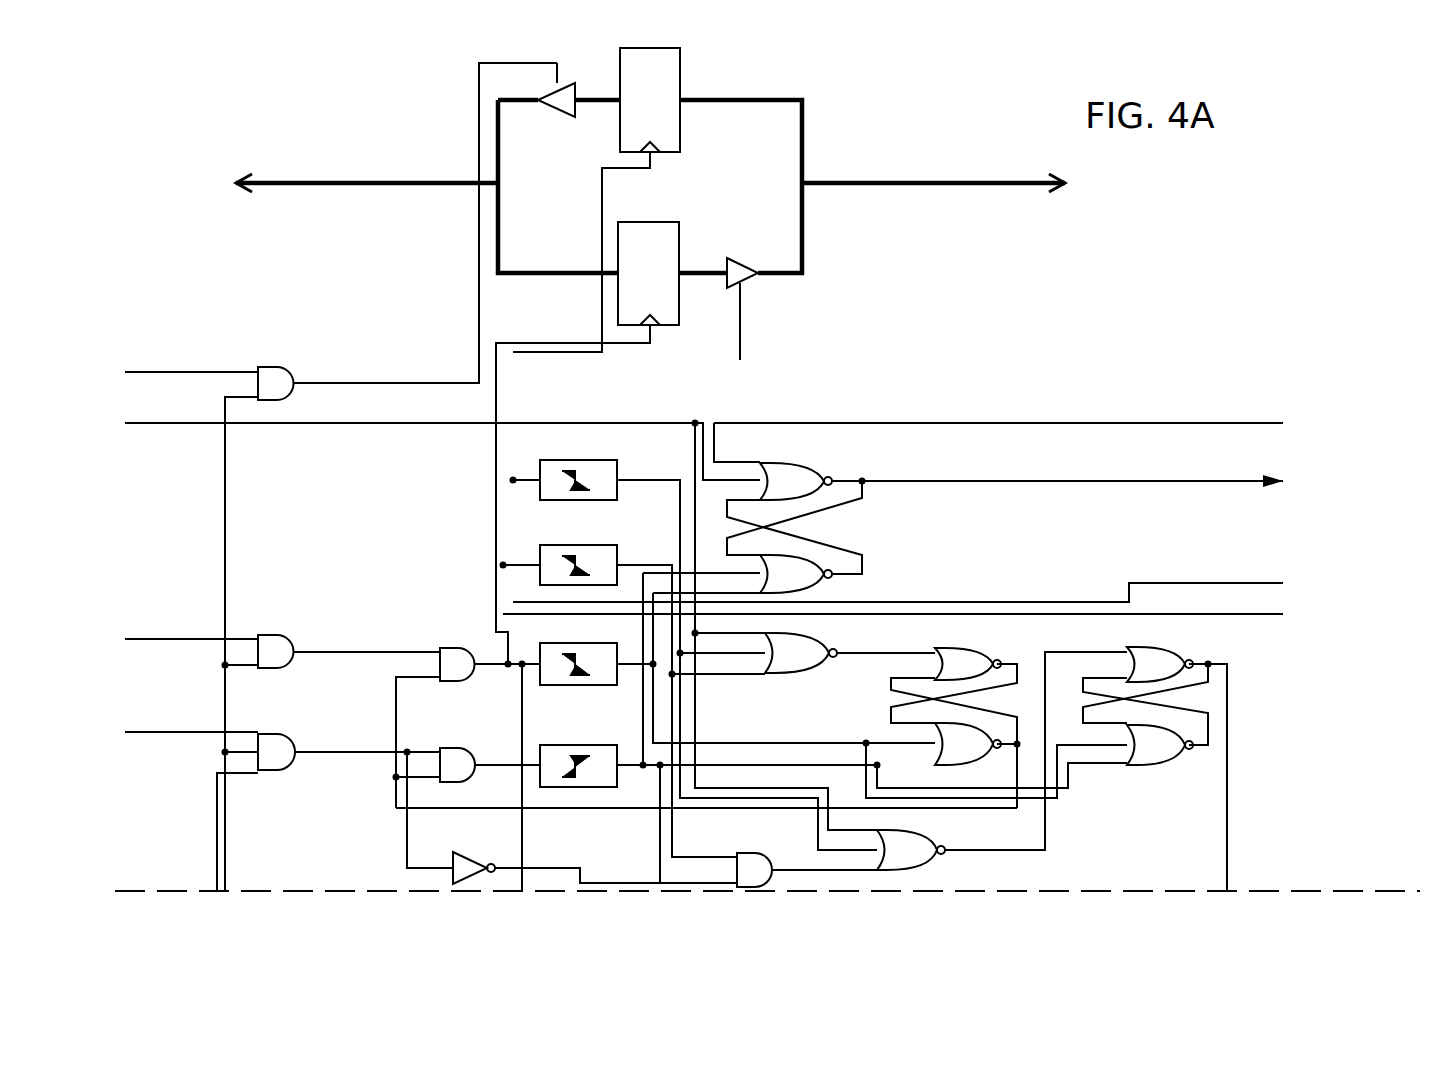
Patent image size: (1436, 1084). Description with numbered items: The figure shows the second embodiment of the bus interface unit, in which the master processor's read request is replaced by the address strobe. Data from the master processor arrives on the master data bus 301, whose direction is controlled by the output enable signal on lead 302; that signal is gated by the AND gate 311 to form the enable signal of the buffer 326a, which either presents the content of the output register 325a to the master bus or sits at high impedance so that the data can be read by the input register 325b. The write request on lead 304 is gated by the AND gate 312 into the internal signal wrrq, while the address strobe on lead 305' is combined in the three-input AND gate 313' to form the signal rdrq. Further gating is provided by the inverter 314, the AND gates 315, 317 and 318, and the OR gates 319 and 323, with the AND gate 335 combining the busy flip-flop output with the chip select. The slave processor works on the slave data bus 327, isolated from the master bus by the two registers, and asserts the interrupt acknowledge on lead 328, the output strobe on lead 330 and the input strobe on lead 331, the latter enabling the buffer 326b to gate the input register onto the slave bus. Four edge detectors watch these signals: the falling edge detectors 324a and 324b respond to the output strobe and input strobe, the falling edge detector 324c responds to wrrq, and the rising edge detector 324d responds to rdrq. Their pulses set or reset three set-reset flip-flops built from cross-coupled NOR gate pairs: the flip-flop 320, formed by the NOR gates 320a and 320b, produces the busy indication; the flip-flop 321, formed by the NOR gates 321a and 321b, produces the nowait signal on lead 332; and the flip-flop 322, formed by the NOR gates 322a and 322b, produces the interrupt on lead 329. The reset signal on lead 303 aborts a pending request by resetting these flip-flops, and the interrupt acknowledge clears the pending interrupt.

The master data bus 301 is at (433, 185).
The OE lead 302 is at (196, 371).
The reset lead 303 is at (185, 428).
The WR lead 304 is at (187, 640).
The AS lead 305' is at (191, 745).
The AND gate 311 is at (268, 367).
The AND gate 312 is at (270, 635).
The three-input AND gate 313' is at (339, 740).
The inverter 314 is at (466, 860).
The AND gate 315 is at (750, 853).
The AND gate 317 is at (455, 648).
The AND gate 318 is at (455, 748).
The OR gate 319 is at (920, 865).
The RS flip-flop 320 is at (1155, 756).
The NOR gate 320a is at (1150, 648).
The NOR gate 320b is at (1155, 765).
The RS flip-flop 321 is at (973, 714).
The NOR gate 321a is at (958, 648).
The NOR gate 321b is at (950, 765).
The RS flip-flop 322 is at (827, 518).
The NOR gate 322a is at (790, 463).
The NOR gate 322b is at (818, 592).
The OR gate 323 is at (784, 676).
The falling edge detector 324a is at (633, 457).
The falling edge detector 324b is at (633, 542).
The falling edge detector 324c is at (590, 643).
The rising edge detector 324d is at (590, 745).
The output register 325a is at (680, 138).
The input register 325b is at (680, 250).
The buffer 326a is at (556, 109).
The buffer 326b is at (758, 242).
The slave data bus 327 is at (940, 185).
The intack lead 328 is at (1178, 421).
The int lead 329 is at (1178, 477).
The outs lead 330 is at (1190, 582).
The ins lead 331 is at (1252, 615).
The nowait lead 332 is at (626, 808).
The AND gate 335 is at (479, 300).